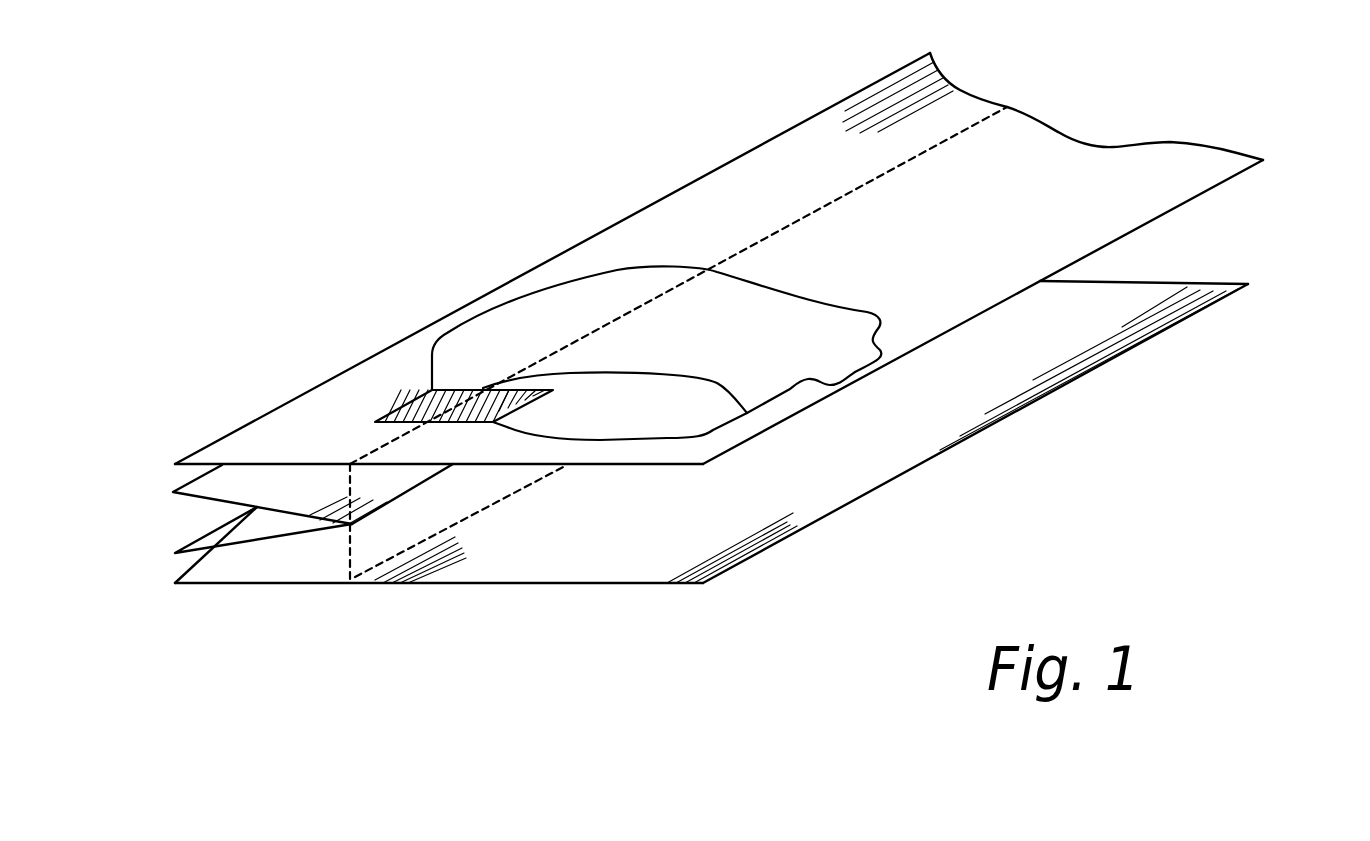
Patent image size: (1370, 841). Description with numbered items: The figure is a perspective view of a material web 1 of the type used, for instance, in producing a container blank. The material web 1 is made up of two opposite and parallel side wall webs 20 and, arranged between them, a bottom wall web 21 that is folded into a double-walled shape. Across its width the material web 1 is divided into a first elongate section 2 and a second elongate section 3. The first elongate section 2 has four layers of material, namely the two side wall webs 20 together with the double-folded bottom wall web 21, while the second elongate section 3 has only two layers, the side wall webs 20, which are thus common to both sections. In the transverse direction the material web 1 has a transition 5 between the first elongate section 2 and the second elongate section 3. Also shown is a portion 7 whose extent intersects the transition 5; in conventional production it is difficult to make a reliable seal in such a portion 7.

The material web 1 is at (505, 165).
The first elongate section 2 is at (238, 600).
The second elongate section 3 is at (487, 608).
The transition 5 is at (350, 562).
The portion 7 is at (425, 403).
The side wall web 20 is at (1183, 293).
The bottom wall web 21 is at (207, 485).